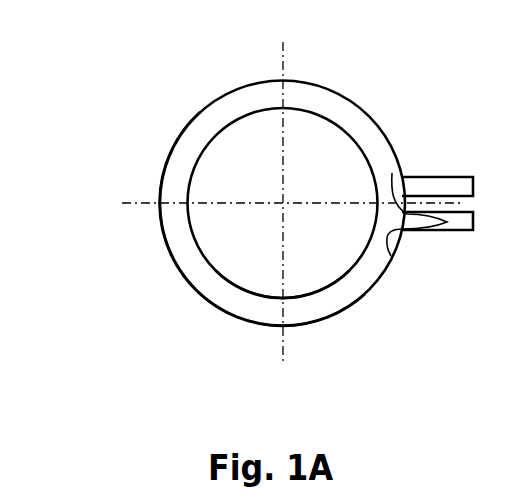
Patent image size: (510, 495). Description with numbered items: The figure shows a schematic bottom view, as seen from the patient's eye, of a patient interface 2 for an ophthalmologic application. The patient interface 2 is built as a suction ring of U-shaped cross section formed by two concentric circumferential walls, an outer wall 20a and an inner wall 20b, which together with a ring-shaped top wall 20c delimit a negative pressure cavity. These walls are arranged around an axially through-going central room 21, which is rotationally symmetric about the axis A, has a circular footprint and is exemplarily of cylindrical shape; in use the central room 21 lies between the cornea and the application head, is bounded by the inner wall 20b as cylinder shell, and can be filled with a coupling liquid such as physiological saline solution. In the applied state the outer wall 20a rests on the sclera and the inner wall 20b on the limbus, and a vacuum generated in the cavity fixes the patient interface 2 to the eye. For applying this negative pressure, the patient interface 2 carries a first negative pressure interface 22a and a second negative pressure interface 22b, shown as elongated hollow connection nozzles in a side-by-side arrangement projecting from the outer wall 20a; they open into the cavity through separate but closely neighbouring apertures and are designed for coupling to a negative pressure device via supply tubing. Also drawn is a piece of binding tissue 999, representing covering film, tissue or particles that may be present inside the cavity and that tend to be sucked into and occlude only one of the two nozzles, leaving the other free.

The patient interface 2 is at (205, 75).
The central room 21 is at (314, 142).
The outer wall 20a is at (258, 323).
The inner wall 20b is at (327, 290).
The ring-shaped top wall 20c is at (183, 163).
The first negative pressure interface 22a is at (459, 222).
The second negative pressure interface 22b is at (448, 186).
The binding tissue 999 is at (388, 233).
The axis A is at (287, 208).